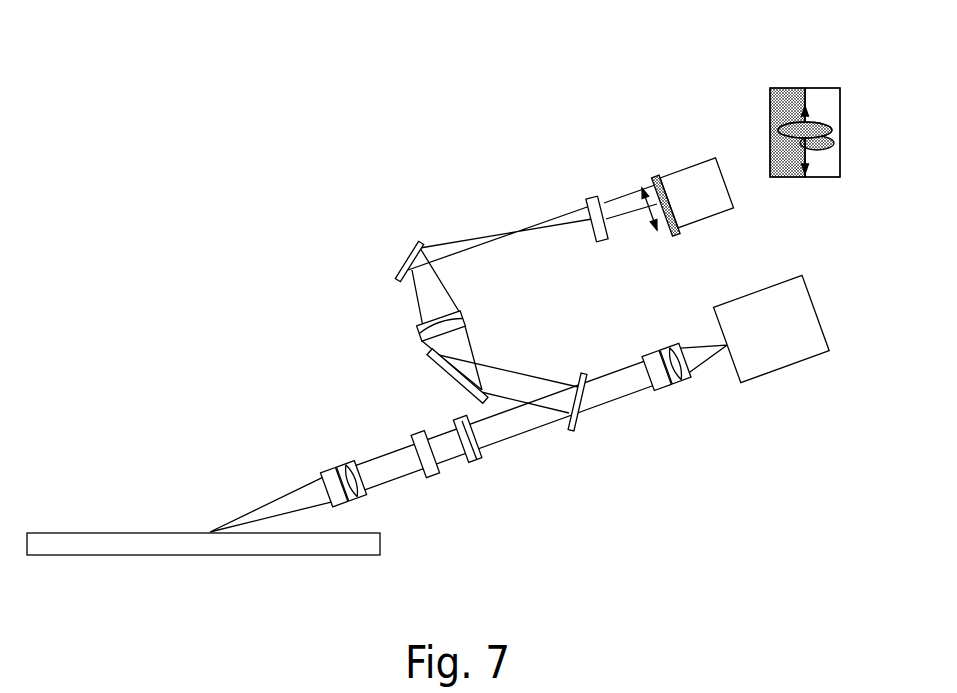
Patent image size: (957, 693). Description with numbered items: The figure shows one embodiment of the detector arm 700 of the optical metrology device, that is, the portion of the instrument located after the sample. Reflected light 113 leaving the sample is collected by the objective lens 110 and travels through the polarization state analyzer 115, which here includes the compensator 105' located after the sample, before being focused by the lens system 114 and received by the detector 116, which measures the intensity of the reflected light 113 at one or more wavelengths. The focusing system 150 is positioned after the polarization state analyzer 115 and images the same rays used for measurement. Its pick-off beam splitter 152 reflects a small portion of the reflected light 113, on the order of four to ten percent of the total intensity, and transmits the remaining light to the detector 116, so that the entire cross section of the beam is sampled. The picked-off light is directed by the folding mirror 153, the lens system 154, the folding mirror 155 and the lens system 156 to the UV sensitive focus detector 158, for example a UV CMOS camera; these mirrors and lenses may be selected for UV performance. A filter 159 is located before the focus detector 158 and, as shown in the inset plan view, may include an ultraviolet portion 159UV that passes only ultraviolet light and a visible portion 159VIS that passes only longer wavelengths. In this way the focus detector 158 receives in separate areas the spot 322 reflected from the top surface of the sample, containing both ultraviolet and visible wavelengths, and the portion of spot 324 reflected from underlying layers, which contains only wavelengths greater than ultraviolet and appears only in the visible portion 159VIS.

The detector arm 700 is at (298, 130).
The focusing system 150 is at (355, 193).
The folding mirror 155 is at (398, 273).
The folding mirror 153 is at (433, 367).
The lens system 154 is at (466, 318).
The beam splitter 152 is at (580, 373).
The reflected light 113 is at (262, 508).
The objective lens 110 is at (357, 494).
The compensator 105' is at (455, 488).
The lens system 114 is at (480, 461).
The polarization state analyzer 115 is at (541, 533).
The detector 116 is at (753, 291).
The lens system 156 is at (608, 243).
The focus detector 158 is at (735, 198).
The filter 159 is at (650, 178).
The ultraviolet portion 159UV is at (782, 103).
The visible portion 159VIS is at (820, 95).
The spot 322 is at (778, 130).
The portion of spot 324 is at (832, 148).